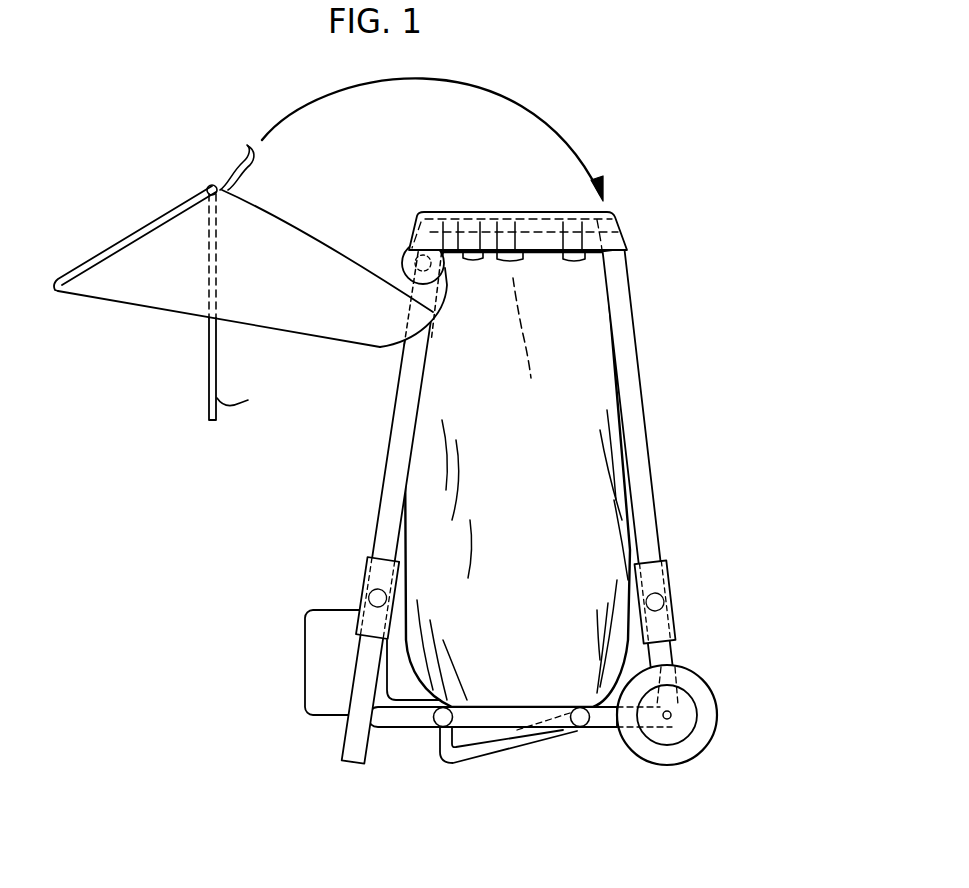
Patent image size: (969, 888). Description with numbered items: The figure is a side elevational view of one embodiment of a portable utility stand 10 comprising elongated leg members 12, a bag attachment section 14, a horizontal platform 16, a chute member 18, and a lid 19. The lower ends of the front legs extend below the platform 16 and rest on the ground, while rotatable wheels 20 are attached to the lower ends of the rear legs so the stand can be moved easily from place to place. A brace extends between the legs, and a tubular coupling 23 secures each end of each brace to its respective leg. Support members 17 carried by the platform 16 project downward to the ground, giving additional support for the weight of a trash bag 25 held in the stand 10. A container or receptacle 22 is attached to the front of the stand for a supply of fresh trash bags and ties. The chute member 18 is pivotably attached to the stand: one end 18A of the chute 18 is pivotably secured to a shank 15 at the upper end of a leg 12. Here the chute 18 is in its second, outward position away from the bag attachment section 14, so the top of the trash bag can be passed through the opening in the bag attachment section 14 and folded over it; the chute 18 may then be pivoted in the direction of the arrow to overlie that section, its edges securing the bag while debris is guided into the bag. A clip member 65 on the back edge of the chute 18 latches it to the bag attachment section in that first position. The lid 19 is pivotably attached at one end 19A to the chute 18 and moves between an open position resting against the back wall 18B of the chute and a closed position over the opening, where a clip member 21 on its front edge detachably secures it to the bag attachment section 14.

The portable utility stand 10 is at (727, 112).
The elongated leg members 12 is at (383, 542).
The bag attachment section 14 is at (507, 212).
The shank 15 is at (402, 274).
The horizontal platform 16 is at (403, 728).
The support members 17 is at (463, 764).
The chute member 18 is at (241, 268).
The end of the chute 18A is at (401, 275).
The back wall of chute 18B is at (100, 251).
The lid 19 is at (204, 294).
The end of the lid 19A is at (207, 190).
The rotatable wheels 20 is at (669, 779).
The clip member 21 is at (218, 402).
The container or receptacle 22 is at (305, 636).
The tubular coupling 23 is at (365, 580).
The trash bag 25 is at (570, 387).
The clip member 65 is at (236, 152).